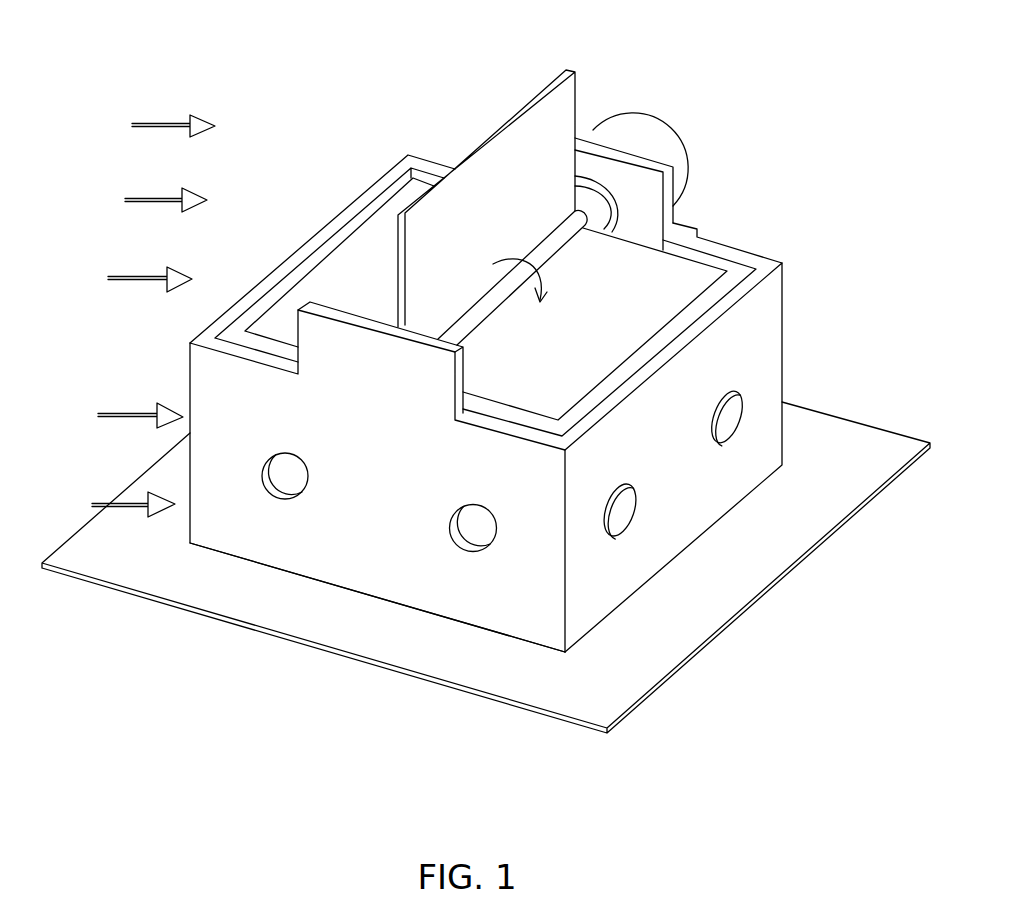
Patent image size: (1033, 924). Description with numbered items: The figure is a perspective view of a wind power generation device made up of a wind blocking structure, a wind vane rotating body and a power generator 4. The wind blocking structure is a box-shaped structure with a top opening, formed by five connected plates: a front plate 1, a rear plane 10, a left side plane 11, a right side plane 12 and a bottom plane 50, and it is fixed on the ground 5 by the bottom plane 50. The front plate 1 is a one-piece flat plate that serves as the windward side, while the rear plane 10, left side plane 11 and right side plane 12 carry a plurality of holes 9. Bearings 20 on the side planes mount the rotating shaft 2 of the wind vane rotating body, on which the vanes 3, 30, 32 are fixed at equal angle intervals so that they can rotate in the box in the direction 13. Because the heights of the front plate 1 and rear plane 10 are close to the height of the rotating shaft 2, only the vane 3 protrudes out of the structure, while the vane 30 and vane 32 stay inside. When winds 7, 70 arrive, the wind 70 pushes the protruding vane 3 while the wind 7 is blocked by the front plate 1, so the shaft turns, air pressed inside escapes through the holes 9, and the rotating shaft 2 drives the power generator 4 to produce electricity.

The front plate 1 is at (519, 432).
The rotating shaft 2 is at (478, 302).
The vane 3 is at (490, 158).
The power generator 4 is at (642, 128).
The ground 5 is at (167, 603).
The wind 7 is at (98, 413).
The holes 9 is at (280, 500).
The rear plane 10 is at (707, 527).
The left side plane 11 is at (368, 585).
The right side plane 12 is at (730, 243).
The direction 13 is at (541, 294).
The bearings 20 is at (587, 210).
The vane 30 is at (647, 298).
The vane 32 is at (346, 250).
The bottom plane 50 is at (470, 625).
The wind 70 is at (153, 123).